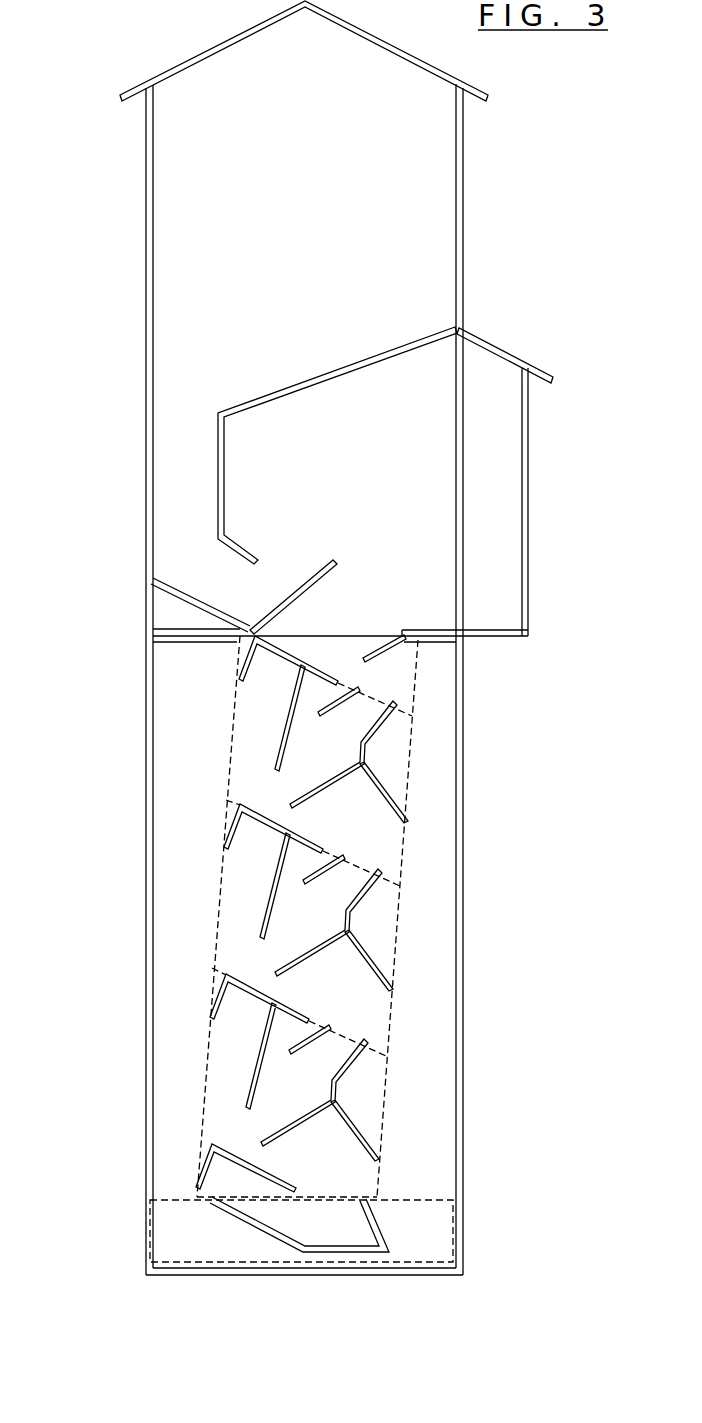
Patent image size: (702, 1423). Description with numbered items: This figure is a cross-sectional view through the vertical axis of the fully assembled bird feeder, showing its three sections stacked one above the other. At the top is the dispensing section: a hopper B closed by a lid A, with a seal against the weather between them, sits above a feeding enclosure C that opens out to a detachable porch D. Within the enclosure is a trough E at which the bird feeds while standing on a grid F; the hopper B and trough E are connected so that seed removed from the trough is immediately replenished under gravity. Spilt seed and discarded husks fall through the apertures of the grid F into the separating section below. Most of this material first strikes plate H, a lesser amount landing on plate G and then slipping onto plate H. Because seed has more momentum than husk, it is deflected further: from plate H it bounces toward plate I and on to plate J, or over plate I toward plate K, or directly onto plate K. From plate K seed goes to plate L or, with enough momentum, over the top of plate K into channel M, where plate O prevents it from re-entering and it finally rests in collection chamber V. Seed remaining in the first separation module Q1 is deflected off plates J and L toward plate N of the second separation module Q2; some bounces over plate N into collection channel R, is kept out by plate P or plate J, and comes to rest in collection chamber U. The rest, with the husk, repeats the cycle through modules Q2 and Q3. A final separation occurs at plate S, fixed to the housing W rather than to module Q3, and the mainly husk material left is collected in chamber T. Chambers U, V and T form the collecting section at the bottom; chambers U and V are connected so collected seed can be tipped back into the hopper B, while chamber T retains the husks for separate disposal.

The lid A is at (200, 55).
The hopper B is at (222, 240).
The feeding enclosure C is at (308, 468).
The detachable porch D is at (498, 398).
The trough E is at (300, 596).
The grid F is at (330, 633).
The plate G is at (460, 632).
The plate H is at (240, 673).
The plate I is at (318, 714).
The plate J is at (285, 718).
The plate K is at (377, 732).
The plate L is at (298, 790).
The channel M is at (430, 767).
The plate N is at (227, 825).
The plate O is at (396, 803).
The plate P is at (223, 843).
The first separation module Q1 is at (353, 820).
The second separation module Q2 is at (340, 1000).
The third separation module Q3 is at (338, 1162).
The collection channel R is at (178, 1077).
The plate S is at (200, 1175).
The chamber T is at (328, 1222).
The collection chamber U is at (182, 1232).
The collection chamber V is at (413, 1238).
The housing W is at (148, 940).